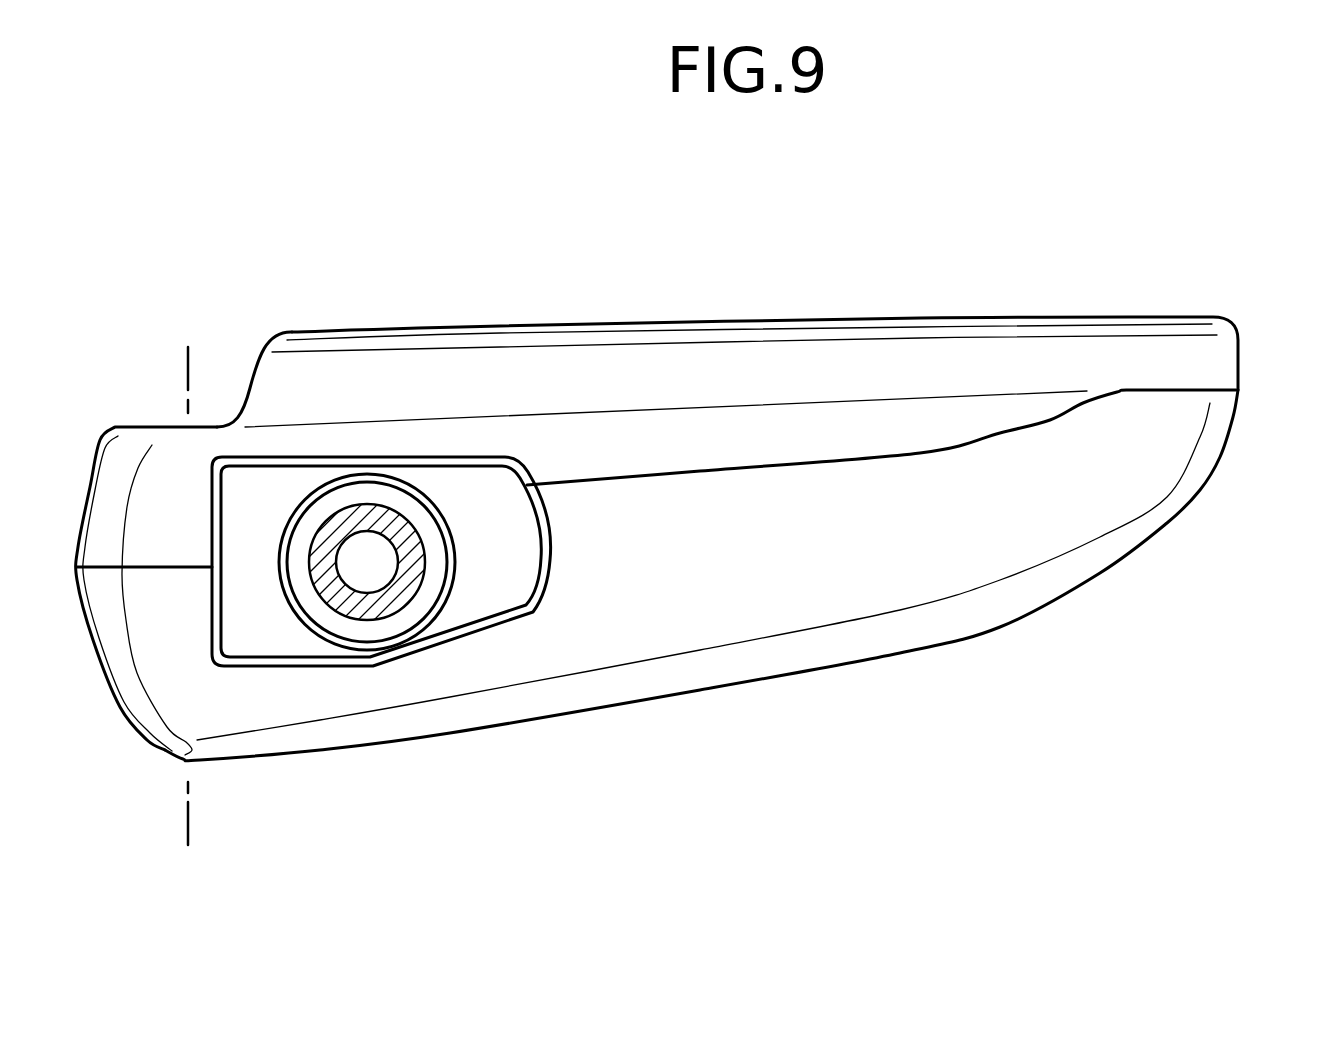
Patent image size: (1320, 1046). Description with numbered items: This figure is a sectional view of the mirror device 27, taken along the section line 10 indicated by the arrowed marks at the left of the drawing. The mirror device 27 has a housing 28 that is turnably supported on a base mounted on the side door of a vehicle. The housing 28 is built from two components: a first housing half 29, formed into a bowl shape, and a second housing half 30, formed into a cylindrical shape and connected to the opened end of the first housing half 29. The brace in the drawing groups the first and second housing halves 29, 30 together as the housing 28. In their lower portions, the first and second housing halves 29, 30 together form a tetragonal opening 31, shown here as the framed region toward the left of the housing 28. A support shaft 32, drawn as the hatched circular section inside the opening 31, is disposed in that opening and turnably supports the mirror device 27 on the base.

The section line 10- 10 is at (190, 370).
The mirror device 27 is at (1145, 308).
The housing 28 is at (703, 586).
The first housing half 29 is at (1095, 512).
The second housing half 30 is at (962, 428).
The tetragonal opening 31 is at (482, 618).
The support shaft 32 is at (397, 522).